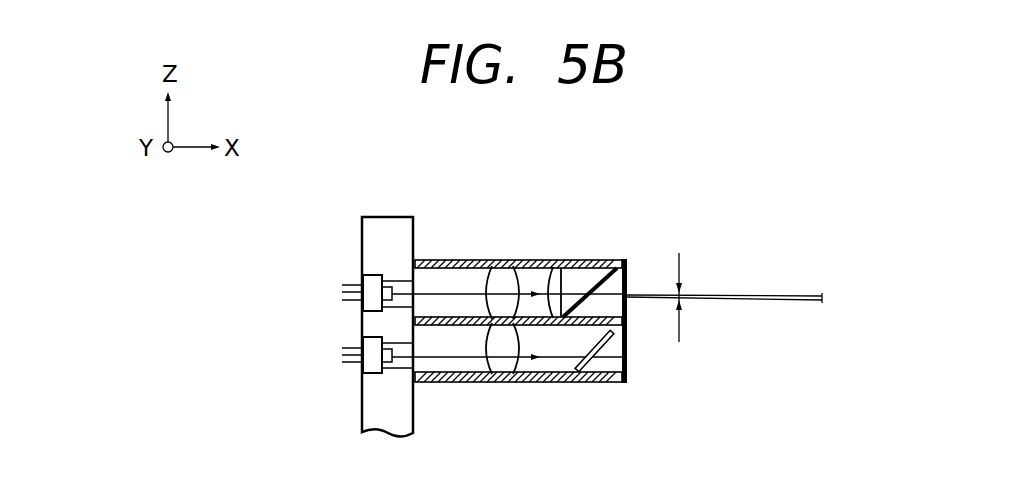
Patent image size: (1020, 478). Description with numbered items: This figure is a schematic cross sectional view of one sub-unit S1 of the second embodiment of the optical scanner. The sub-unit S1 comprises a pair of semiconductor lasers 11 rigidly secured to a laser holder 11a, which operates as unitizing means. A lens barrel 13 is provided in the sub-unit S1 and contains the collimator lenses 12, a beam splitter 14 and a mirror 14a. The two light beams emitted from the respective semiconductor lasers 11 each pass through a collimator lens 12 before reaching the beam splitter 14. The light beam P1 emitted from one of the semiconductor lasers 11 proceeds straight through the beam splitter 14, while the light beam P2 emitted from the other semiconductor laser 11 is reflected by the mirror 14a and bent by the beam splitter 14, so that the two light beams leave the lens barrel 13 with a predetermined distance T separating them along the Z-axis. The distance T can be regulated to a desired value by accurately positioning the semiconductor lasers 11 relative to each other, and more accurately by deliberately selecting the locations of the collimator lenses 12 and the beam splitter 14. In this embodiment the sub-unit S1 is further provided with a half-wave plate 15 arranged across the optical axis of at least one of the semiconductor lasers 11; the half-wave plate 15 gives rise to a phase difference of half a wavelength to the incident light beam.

The sub-unit S1 is at (312, 268).
The semiconductor laser 11 is at (368, 310).
The laser holder 11a is at (395, 218).
The collimator lens 12 is at (502, 263).
The lens barrel 13 is at (537, 382).
The beam splitter 14 is at (593, 263).
The mirror 14a is at (600, 350).
The half-wave plate 15 is at (555, 263).
The light beam P1 is at (790, 295).
The light beam P2 is at (793, 300).
The distance T is at (682, 300).